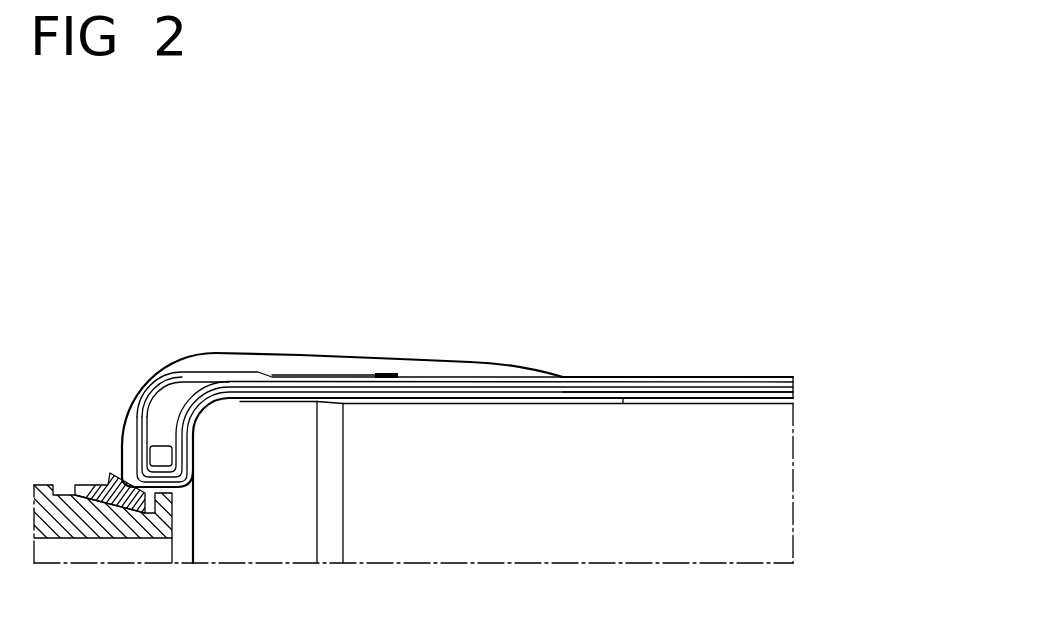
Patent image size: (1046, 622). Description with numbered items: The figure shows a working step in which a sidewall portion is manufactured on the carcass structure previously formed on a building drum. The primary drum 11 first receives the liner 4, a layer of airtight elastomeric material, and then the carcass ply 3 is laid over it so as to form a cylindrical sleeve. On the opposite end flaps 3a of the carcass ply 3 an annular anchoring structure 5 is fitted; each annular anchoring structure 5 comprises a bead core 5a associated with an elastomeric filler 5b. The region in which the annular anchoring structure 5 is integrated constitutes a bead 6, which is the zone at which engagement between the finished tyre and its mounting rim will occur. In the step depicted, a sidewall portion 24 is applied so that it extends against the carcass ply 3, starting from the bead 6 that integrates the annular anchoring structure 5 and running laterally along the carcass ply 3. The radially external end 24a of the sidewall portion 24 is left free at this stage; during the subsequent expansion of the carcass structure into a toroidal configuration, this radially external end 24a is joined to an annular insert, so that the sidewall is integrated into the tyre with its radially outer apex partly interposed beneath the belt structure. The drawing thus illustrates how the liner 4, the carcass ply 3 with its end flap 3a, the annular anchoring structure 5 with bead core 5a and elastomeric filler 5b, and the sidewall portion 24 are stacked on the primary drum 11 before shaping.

The carcass ply 3 is at (682, 388).
The end flap of the carcass ply 3a is at (376, 372).
The liner 4 is at (741, 392).
The annular anchoring structure 5 is at (162, 404).
The bead core 5a is at (155, 458).
The elastomeric filler 5b is at (188, 393).
The bead 6 is at (239, 365).
The primary drum 11 is at (808, 442).
The sidewall portion 24 is at (481, 370).
The radially external end of the sidewall portion 24a is at (543, 373).